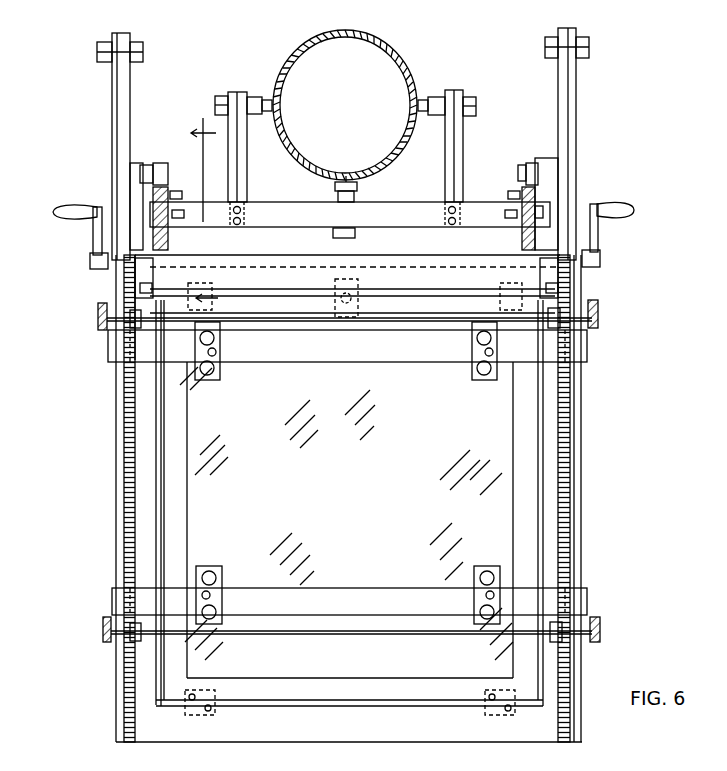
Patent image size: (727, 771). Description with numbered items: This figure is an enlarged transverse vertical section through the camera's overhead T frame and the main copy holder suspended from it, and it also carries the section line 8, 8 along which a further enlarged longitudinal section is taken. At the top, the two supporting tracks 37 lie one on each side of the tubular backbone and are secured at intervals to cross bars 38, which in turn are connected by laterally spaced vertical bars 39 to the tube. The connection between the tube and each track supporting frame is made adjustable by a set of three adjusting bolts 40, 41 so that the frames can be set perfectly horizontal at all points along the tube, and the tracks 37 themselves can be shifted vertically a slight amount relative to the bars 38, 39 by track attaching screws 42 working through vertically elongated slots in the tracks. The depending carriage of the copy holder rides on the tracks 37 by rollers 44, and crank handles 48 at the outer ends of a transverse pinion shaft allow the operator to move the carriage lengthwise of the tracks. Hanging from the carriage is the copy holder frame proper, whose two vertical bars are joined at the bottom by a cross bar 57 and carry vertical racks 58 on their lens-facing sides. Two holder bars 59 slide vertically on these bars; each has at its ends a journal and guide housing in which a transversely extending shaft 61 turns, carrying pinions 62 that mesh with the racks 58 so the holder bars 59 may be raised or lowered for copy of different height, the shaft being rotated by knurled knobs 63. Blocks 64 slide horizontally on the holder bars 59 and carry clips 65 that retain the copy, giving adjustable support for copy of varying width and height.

The section line 8— 8 is at (202, 214).
The supporting track 37 is at (158, 201).
The cross bar 38 is at (390, 228).
The vertical bar 39 is at (455, 145).
The adjusting bolt 40 is at (260, 98).
The adjusting bolt 41 is at (358, 194).
The track attaching screw 42 is at (542, 214).
The roller 44 is at (157, 172).
The crank handle 48 is at (93, 233).
The cross bar 57 is at (510, 730).
The vertical rack 58 is at (572, 442).
The holder bar 59 is at (440, 352).
The transversely extending shaft 61 is at (370, 316).
The pinion 62 is at (582, 335).
The knurled knob 63 is at (600, 306).
The block 64 is at (220, 350).
The clip 65 is at (214, 576).